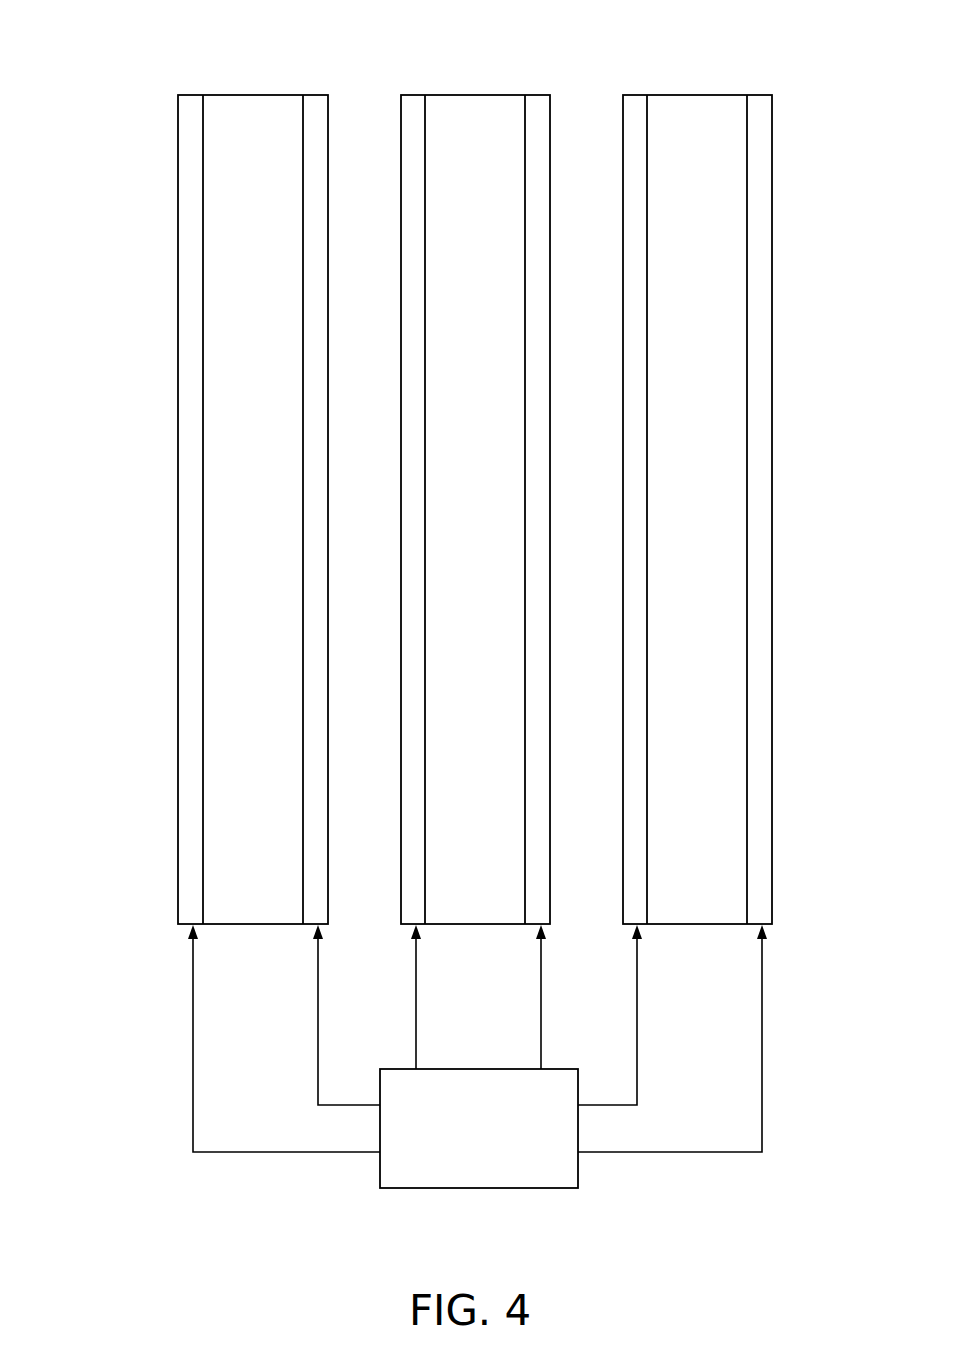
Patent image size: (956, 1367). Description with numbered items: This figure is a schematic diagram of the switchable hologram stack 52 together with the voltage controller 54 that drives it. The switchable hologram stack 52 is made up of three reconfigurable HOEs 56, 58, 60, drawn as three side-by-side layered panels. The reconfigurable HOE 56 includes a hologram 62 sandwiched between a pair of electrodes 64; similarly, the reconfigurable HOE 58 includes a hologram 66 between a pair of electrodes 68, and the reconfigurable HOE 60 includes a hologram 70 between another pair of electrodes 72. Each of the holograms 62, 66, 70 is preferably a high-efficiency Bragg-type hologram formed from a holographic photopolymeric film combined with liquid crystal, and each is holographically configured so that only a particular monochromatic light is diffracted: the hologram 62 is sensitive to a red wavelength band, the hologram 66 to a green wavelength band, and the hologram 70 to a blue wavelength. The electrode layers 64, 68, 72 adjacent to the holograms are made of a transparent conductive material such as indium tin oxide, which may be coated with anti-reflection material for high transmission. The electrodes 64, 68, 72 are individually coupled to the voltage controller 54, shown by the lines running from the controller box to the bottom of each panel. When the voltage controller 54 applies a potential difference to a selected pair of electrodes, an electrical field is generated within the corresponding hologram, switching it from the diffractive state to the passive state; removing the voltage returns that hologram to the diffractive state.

The switchable hologram stack 52 is at (93, 203).
The voltage controller 54 is at (532, 1188).
The reconfigurable HOE 56 is at (330, 85).
The reconfigurable HOE 58 is at (402, 85).
The reconfigurable HOE 60 is at (772, 85).
The hologram 62 is at (228, 652).
The electrodes 64 is at (317, 298).
The hologram 66 is at (492, 628).
The electrodes 68 is at (410, 403).
The hologram 70 is at (725, 595).
The electrodes 72 is at (635, 220).